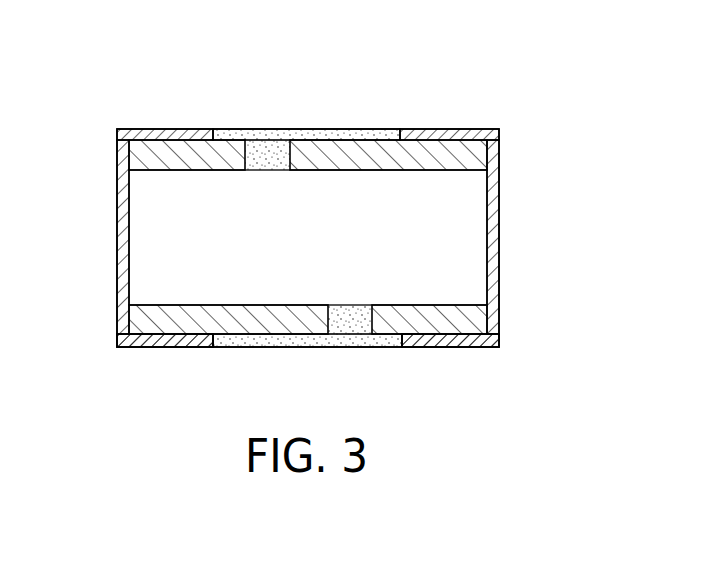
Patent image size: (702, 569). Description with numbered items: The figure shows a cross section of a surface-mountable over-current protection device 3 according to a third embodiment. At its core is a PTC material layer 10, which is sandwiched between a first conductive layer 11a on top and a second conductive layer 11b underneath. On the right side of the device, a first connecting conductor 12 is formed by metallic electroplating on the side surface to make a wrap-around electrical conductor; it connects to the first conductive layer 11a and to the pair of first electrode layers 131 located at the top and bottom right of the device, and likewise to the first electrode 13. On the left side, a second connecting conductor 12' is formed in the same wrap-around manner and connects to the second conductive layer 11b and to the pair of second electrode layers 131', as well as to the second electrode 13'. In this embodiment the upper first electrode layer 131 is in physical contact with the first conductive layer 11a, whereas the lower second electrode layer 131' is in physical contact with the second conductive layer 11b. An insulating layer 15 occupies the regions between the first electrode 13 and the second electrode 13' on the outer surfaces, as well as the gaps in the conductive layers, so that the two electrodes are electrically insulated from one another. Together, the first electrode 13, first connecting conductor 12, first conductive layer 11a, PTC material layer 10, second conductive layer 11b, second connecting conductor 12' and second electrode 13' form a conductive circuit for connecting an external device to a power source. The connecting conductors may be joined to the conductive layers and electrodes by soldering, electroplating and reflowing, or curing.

The surface-mountable over-current protection device 3 is at (499, 108).
The PTC material layer 10 is at (468, 213).
The first conductive layer 11a is at (357, 155).
The second conductive layer 11b is at (250, 322).
The first connecting conductor 12 is at (524, 237).
The second connecting conductor 12' is at (93, 237).
The first electrode 13 is at (450, 374).
The second electrode 13' is at (165, 374).
The first electrode layers 131 is at (487, 238).
The second electrode layers 131' is at (127, 237).
The insulating layer 15 is at (303, 130).